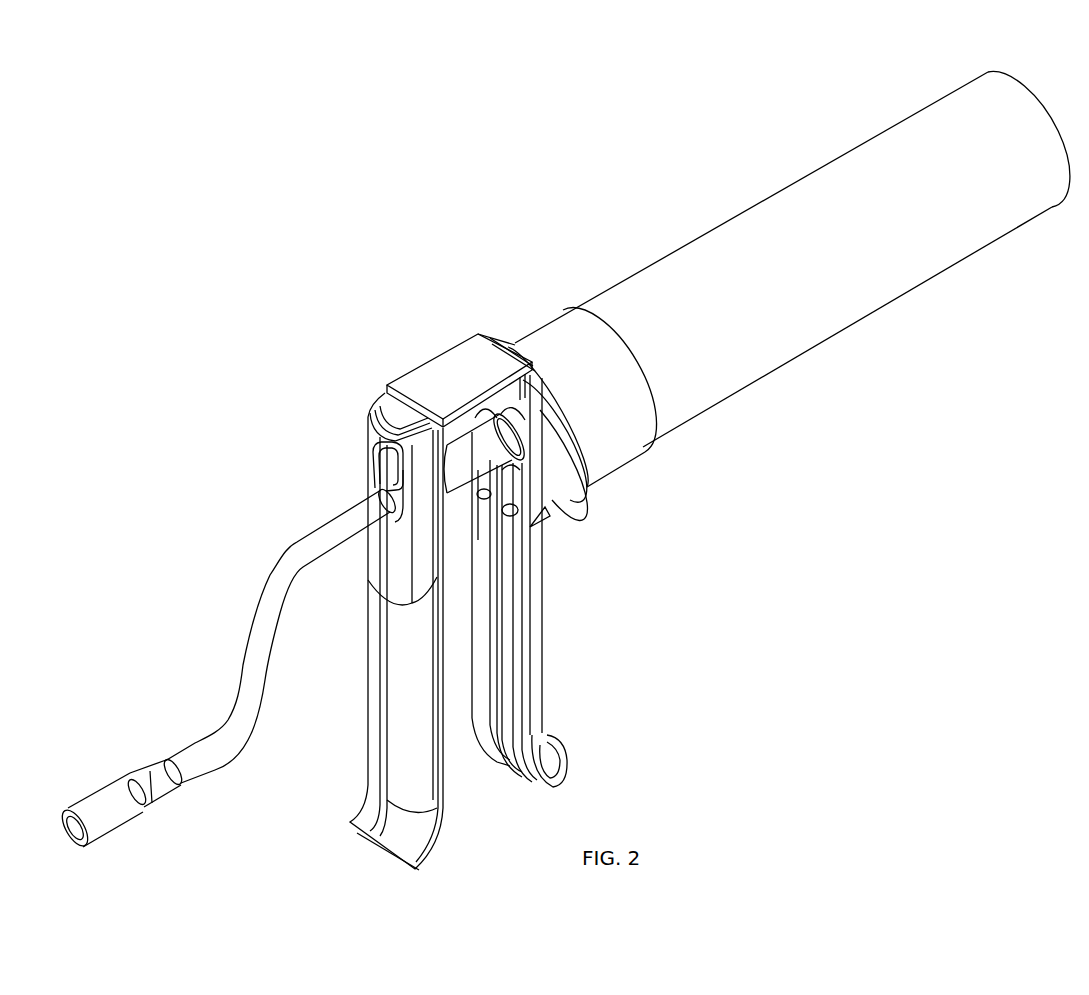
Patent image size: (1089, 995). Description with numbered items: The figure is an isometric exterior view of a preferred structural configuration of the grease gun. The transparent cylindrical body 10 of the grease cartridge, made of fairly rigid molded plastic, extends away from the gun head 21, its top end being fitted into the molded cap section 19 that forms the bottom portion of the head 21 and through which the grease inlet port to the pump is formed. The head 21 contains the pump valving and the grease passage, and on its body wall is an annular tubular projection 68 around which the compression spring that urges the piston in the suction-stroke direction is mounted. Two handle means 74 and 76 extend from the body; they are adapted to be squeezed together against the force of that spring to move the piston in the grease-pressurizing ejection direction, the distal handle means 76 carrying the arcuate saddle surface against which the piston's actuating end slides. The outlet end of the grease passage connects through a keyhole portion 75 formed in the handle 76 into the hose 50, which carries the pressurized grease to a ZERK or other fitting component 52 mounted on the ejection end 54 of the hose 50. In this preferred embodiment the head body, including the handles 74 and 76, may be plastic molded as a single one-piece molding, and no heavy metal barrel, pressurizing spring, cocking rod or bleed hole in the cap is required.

The cylindrical body 10 is at (780, 176).
The cap section 19 is at (513, 347).
The gun head 21 is at (438, 347).
The annular tubular projection 68 is at (465, 455).
The keyhole portion 75 is at (385, 476).
The hose 50 is at (265, 583).
The fitting component 52 is at (112, 830).
The ejection end 54 is at (153, 762).
The handle means 74 is at (547, 607).
The handle means 76 is at (445, 753).